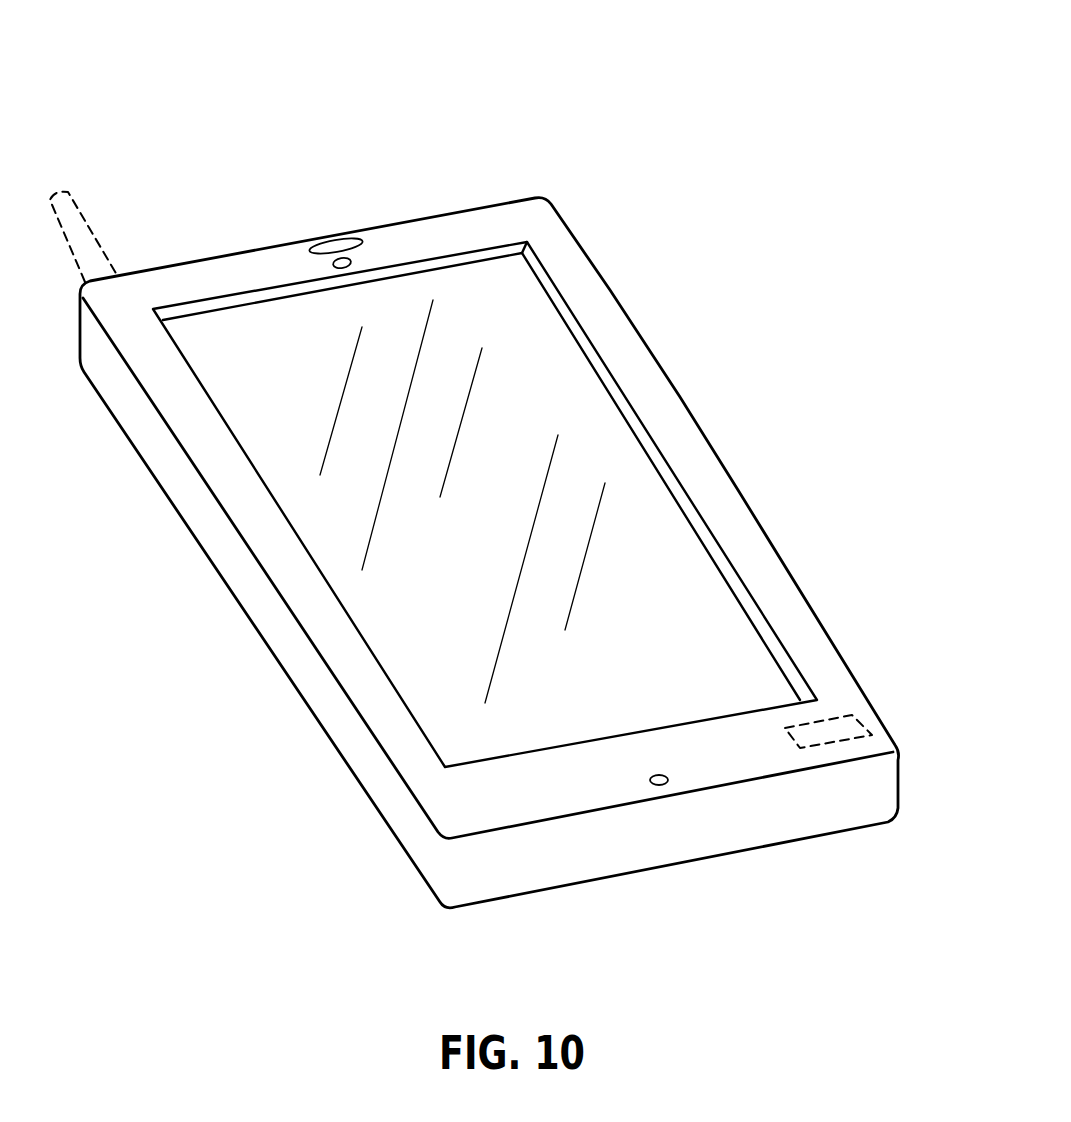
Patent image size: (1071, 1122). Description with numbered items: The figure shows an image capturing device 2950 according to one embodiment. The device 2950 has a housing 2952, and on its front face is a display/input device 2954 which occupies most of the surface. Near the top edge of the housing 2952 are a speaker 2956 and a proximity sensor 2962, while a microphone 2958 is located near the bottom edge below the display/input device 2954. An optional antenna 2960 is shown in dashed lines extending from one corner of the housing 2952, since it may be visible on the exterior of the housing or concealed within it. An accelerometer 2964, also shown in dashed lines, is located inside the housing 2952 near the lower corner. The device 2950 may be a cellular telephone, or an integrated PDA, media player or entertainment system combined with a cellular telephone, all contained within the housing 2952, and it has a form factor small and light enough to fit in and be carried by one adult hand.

The image capturing device 2950 is at (660, 100).
The housing 2952 is at (622, 311).
The display/input device 2954 is at (513, 473).
The speaker 2956 is at (338, 250).
The microphone 2958 is at (658, 786).
The antenna 2960 is at (62, 205).
The proximity sensor 2962 is at (349, 263).
The accelerometer 2964 is at (832, 733).